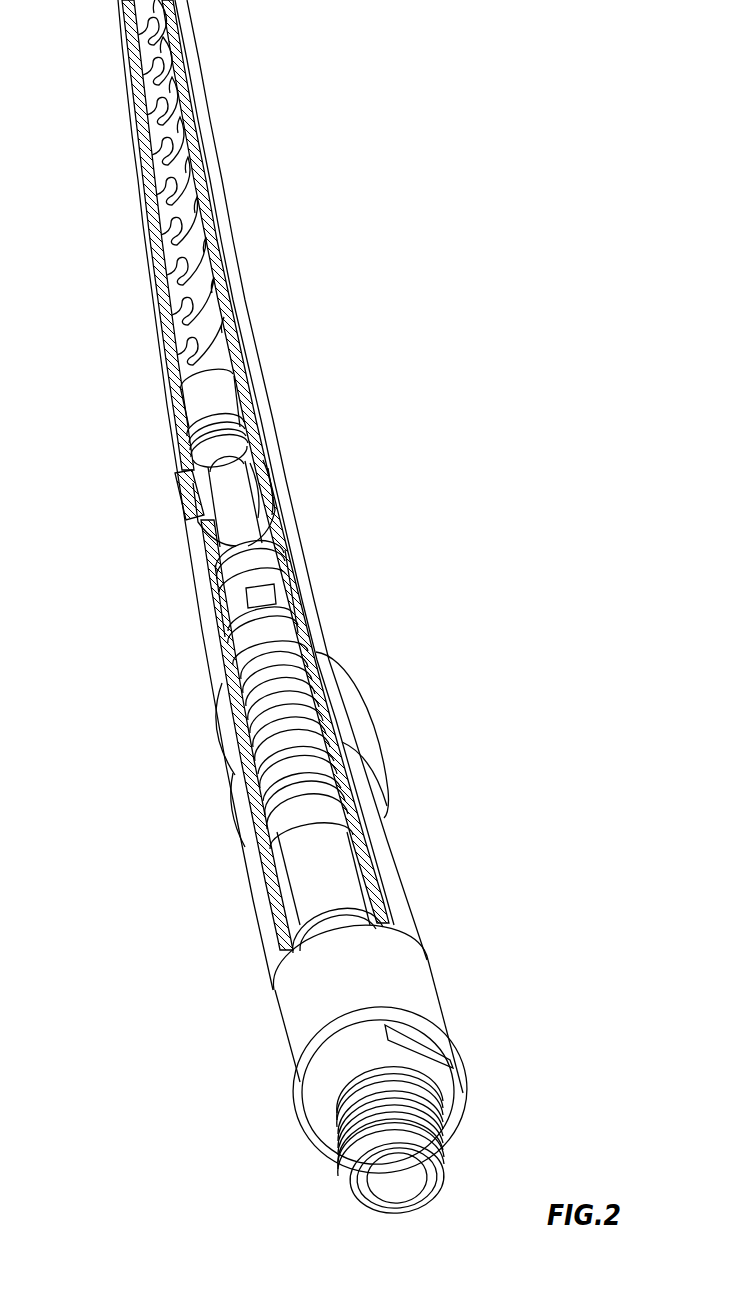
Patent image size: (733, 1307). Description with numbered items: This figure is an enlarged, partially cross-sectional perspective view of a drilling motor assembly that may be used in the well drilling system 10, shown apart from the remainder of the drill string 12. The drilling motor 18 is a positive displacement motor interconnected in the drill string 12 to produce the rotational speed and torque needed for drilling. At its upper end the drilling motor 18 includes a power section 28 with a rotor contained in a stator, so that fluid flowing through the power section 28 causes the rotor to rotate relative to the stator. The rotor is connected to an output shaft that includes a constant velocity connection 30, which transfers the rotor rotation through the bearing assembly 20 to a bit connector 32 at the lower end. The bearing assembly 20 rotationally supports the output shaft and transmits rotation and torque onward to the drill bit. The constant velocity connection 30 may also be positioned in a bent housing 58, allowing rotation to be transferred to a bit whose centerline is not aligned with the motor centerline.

The system 10 is at (349, 131).
The drill string 12 is at (113, 16).
The drilling motor 18 is at (219, 236).
The power section 28 is at (170, 256).
The constant velocity connection 30 is at (237, 500).
The bent housing 58 is at (176, 507).
The bearing assembly 20 is at (334, 697).
The bit connector 32 is at (300, 1087).